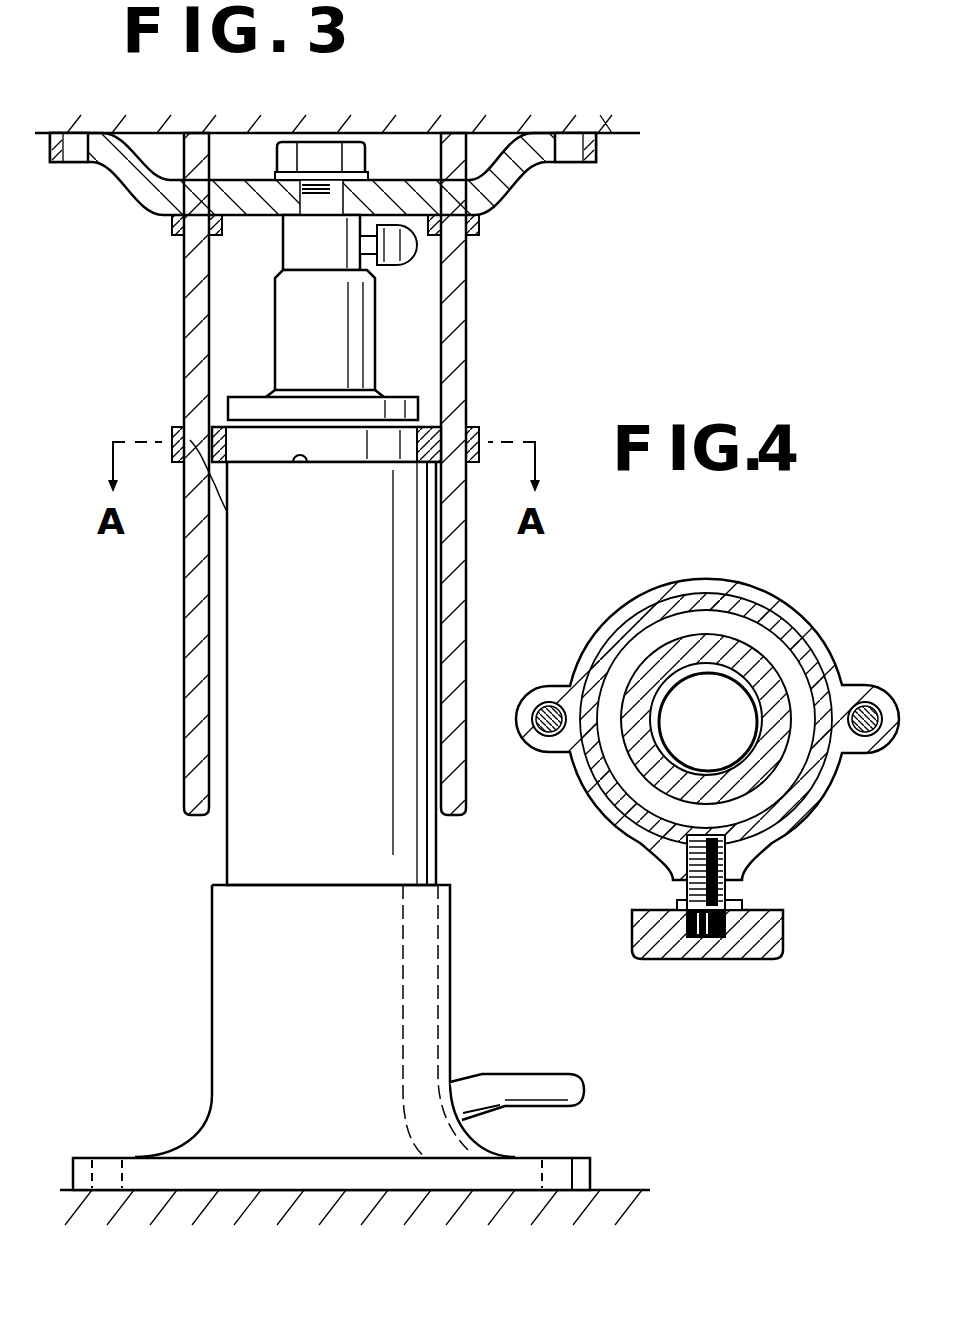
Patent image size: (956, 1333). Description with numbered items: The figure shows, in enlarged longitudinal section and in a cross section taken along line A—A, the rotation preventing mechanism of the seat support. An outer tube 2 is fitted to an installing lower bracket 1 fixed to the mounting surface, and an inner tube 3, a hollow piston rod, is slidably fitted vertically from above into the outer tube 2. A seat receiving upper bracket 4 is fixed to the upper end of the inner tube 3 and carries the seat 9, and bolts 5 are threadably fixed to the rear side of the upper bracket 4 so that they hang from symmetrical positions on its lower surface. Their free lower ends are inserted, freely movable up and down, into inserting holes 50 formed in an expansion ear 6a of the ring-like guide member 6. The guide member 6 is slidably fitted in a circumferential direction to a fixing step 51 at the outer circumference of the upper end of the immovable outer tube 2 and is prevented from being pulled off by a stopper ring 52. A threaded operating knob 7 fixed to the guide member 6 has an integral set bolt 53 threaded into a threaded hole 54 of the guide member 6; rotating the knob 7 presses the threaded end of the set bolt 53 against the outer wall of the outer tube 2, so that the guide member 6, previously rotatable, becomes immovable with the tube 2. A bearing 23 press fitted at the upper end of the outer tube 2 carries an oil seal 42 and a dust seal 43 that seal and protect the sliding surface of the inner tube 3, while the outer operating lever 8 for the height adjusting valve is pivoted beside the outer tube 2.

In FIG. 3, the installing lower bracket 1 is at (207, 942).
In FIG. 3, the outer tube 2 is at (257, 843).
In FIG. 4, the outer tube 2 is at (692, 605).
In FIG. 3, the inner tube 3 is at (305, 310).
In FIG. 4, the inner tube 3 is at (755, 748).
In FIG. 3, the seat receiving upper bracket 4 is at (512, 162).
In FIG. 3, the bolts 5 is at (455, 262).
In FIG. 4, the bolts 5 is at (550, 712).
In FIG. 4, the ring-like member 6 is at (636, 603).
In FIG. 3, the expansion ear 6a is at (188, 443).
In FIG. 4, the expansion ear 6a is at (553, 743).
In FIG. 4, the threaded operating knob 7 is at (770, 935).
In FIG. 3, the outer operating lever 8 is at (523, 1090).
In FIG. 3, the seat 9 is at (600, 136).
In FIG. 4, the bearing 23 is at (758, 640).
In FIG. 4, the oil seal 42 is at (765, 682).
In FIG. 3, the dust seal 43 is at (268, 393).
In FIG. 3, the inserting holes 50 is at (470, 426).
In FIG. 4, the inserting holes 50 is at (546, 737).
In FIG. 3, the fixing step 51 is at (303, 457).
In FIG. 3, the stopper ring 52 is at (226, 435).
In FIG. 4, the set bolt 53 is at (696, 885).
In FIG. 4, the threaded hole 54 is at (728, 865).